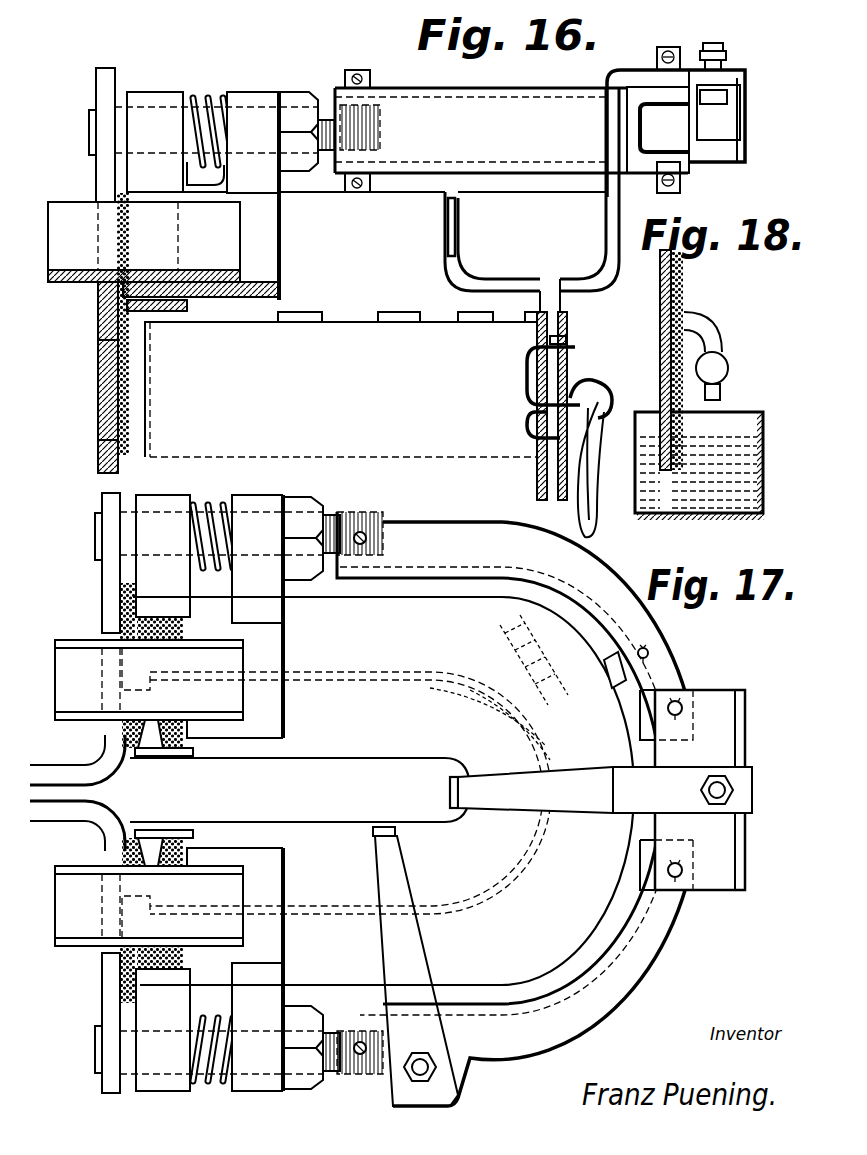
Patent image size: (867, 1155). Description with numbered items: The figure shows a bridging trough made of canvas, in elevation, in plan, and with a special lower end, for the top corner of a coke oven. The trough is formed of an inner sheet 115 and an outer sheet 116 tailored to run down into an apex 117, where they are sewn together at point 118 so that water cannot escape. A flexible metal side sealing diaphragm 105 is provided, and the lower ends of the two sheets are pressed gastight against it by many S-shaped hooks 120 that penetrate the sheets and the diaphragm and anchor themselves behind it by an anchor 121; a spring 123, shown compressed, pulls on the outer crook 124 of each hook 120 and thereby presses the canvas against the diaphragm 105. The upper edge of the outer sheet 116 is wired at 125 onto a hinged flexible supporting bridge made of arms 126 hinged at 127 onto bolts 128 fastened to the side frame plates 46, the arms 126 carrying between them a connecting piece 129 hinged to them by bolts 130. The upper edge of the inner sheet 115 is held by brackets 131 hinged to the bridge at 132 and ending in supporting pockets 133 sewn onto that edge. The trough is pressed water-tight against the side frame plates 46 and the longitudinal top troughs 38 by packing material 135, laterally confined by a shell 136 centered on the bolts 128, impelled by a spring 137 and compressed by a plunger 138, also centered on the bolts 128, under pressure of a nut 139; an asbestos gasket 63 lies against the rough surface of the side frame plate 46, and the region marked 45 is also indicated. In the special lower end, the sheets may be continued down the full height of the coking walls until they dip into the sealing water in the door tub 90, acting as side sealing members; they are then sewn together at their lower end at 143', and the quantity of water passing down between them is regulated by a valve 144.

In FIG. 16, the longitudinal top trough 38 is at (63, 220).
In FIG. 17, the longitudinal top trough 38 is at (77, 656).
In FIG. 16, the pipe elbow / wall section 45 is at (100, 297).
In FIG. 17, the pipe elbow / wall section 45 is at (112, 732).
In FIG. 16, the side frame plate 46 is at (100, 458).
In FIG. 18, the side frame plate 46 is at (662, 273).
In FIG. 17, the side frame plate 46 is at (106, 508).
In FIG. 16, the asbestos gasket 63 is at (98, 420).
In FIG. 17, the asbestos gasket 63 is at (122, 590).
In FIG. 18, the door tub 90 is at (738, 518).
In FIG. 16, the flexible metal side sealing diaphragm 105 is at (362, 322).
In FIG. 17, the flexible metal side sealing diaphragm 105 is at (380, 681).
In FIG. 16, the inner canvas sheet 115 is at (438, 257).
In FIG. 17, the inner canvas sheet 115 is at (447, 751).
In FIG. 16, the outer canvas sheet 116 is at (617, 195).
In FIG. 17, the outer canvas sheet 116 is at (436, 598).
In FIG. 16, the apex 117 is at (552, 313).
In FIG. 16, the sewing point 118 is at (565, 336).
In FIG. 16, the S-shaped hook 120 is at (538, 416).
In FIG. 17, the S-shaped hook 120 is at (520, 640).
In FIG. 16, the anchor 121 is at (538, 382).
In FIG. 17, the anchor 121 is at (516, 712).
In FIG. 16, the spring 123 is at (594, 470).
In FIG. 17, the spring 123 is at (600, 714).
In FIG. 16, the outer crook 124 is at (598, 392).
In FIG. 17, the outer crook 124 is at (547, 580).
In FIG. 16, the wiring point 125 is at (642, 130).
In FIG. 17, the wiring point 125 is at (616, 695).
In FIG. 16, the arm 126 is at (543, 92).
In FIG. 17, the arm 126 is at (615, 578).
In FIG. 16, the hinge 127 is at (370, 74).
In FIG. 17, the hinge 127 is at (368, 534).
In FIG. 16, the bolt 128 is at (372, 128).
In FIG. 17, the bolt 128 is at (339, 520).
In FIG. 16, the connecting piece 129 is at (741, 108).
In FIG. 17, the connecting piece 129 is at (736, 843).
In FIG. 16, the bolt 130 is at (668, 47).
In FIG. 17, the bolt 130 is at (681, 706).
In FIG. 16, the bracket 131 is at (604, 143).
In FIG. 17, the bracket 131 is at (497, 808).
In FIG. 16, the hinge 132 is at (724, 46).
In FIG. 17, the hinge 132 is at (716, 783).
In FIG. 16, the supporting pocket 133 is at (463, 212).
In FIG. 17, the supporting pocket 133 is at (446, 784).
In FIG. 16, the packing material 135 is at (168, 282).
In FIG. 17, the packing material 135 is at (166, 630).
In FIG. 16, the shell 136 is at (185, 315).
In FIG. 17, the shell 136 is at (178, 834).
In FIG. 16, the spring 137 is at (196, 96).
In FIG. 17, the spring 137 is at (204, 503).
In FIG. 16, the plunger 138 is at (252, 99).
In FIG. 17, the plunger 138 is at (268, 503).
In FIG. 16, the nut 139 is at (301, 95).
In FIG. 17, the nut 139 is at (304, 582).
In FIG. 18, the lower sewing point 143' is at (734, 361).
In FIG. 18, the valve 144 is at (728, 366).